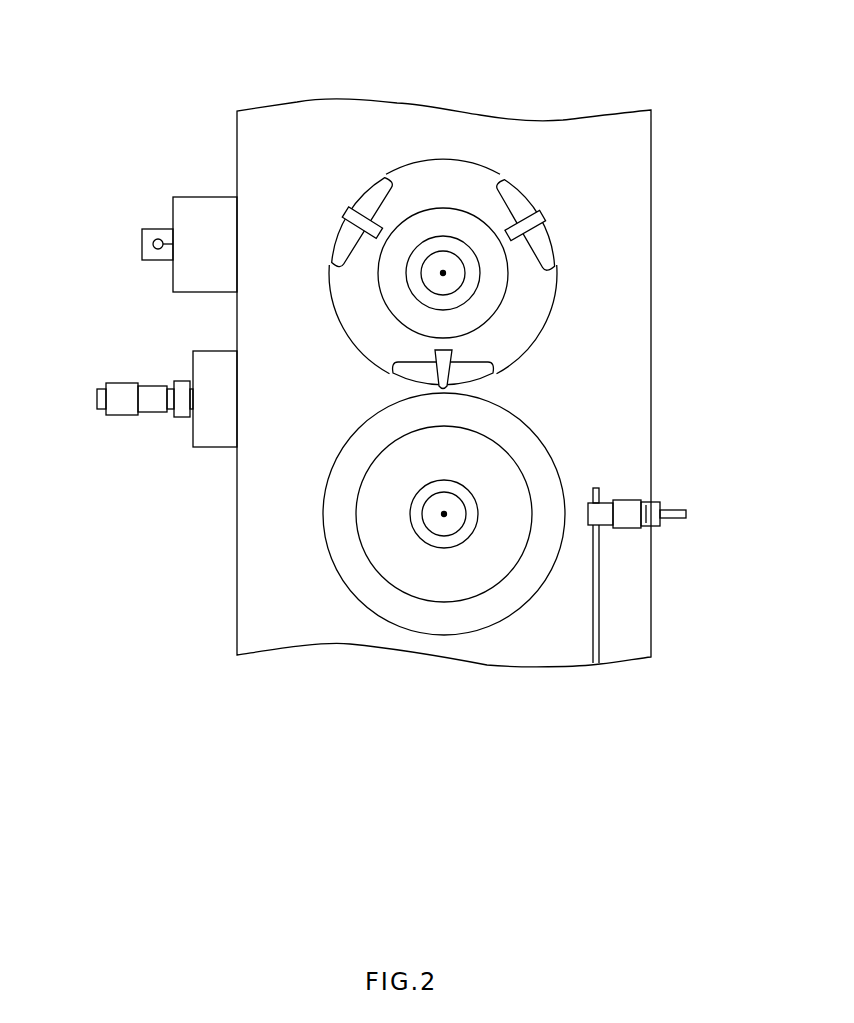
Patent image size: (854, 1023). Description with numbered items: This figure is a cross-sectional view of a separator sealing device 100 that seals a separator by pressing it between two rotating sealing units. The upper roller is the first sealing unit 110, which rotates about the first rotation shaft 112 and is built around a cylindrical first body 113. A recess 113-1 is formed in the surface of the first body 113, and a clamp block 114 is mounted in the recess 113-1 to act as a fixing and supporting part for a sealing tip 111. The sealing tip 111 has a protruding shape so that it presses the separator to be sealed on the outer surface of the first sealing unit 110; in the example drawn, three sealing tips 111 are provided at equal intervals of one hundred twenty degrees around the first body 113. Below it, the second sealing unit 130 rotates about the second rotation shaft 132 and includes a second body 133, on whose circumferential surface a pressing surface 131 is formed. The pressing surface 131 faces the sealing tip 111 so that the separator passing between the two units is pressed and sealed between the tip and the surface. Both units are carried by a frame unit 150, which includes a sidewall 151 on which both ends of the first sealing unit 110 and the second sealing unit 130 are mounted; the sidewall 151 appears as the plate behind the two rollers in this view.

The separator sealing device 100 is at (105, 37).
The first sealing unit 110 is at (453, 236).
The sealing tip 111 is at (363, 222).
The first rotation shaft 112 is at (443, 273).
The first body 113 is at (528, 322).
The recess 113-1 is at (540, 253).
The clamp block 114 is at (520, 202).
The second sealing unit 130 is at (436, 554).
The pressing surface 131 is at (337, 452).
The second rotation shaft 132 is at (444, 514).
The second body 133 is at (473, 577).
The frame unit 150 is at (212, 167).
The sidewall 151 is at (257, 528).